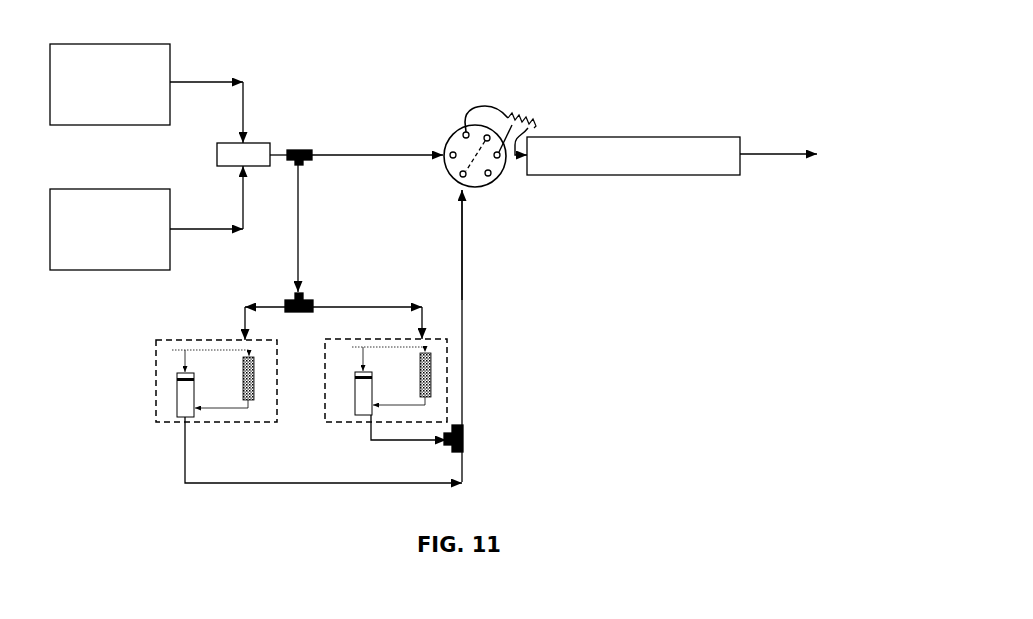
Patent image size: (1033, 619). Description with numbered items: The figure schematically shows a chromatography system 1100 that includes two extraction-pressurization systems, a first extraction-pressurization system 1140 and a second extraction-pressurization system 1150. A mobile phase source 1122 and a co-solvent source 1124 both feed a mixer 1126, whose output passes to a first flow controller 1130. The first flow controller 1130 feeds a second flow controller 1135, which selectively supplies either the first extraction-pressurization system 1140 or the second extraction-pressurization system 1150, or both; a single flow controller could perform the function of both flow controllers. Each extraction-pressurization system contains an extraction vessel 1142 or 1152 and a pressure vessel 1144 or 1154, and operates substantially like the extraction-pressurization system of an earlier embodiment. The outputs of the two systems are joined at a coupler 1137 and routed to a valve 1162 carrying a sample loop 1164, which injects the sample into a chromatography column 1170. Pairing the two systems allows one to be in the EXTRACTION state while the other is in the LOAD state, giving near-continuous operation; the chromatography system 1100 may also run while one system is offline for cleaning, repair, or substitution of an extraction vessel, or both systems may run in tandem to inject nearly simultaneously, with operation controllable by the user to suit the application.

The chromatography system 1100 is at (577, 90).
The mobile phase source 1122 is at (146, 93).
The co-solvent source 1124 is at (146, 218).
The mixer 1126 is at (252, 154).
The first flow controller 1130 is at (298, 132).
The second flow controller 1135 is at (316, 295).
The coupler 1137 is at (478, 436).
The first extraction-pressurization system 1140 is at (172, 424).
The extraction vessel 1142 is at (240, 372).
The pressure vessel 1144 is at (172, 390).
The second extraction-pressurization system 1150 is at (329, 424).
The extraction vessel 1152 is at (410, 372).
The pressure vessel 1154 is at (352, 392).
The valve 1162 is at (452, 127).
The sample loop 1164 is at (517, 103).
The chromatography column 1170 is at (672, 156).